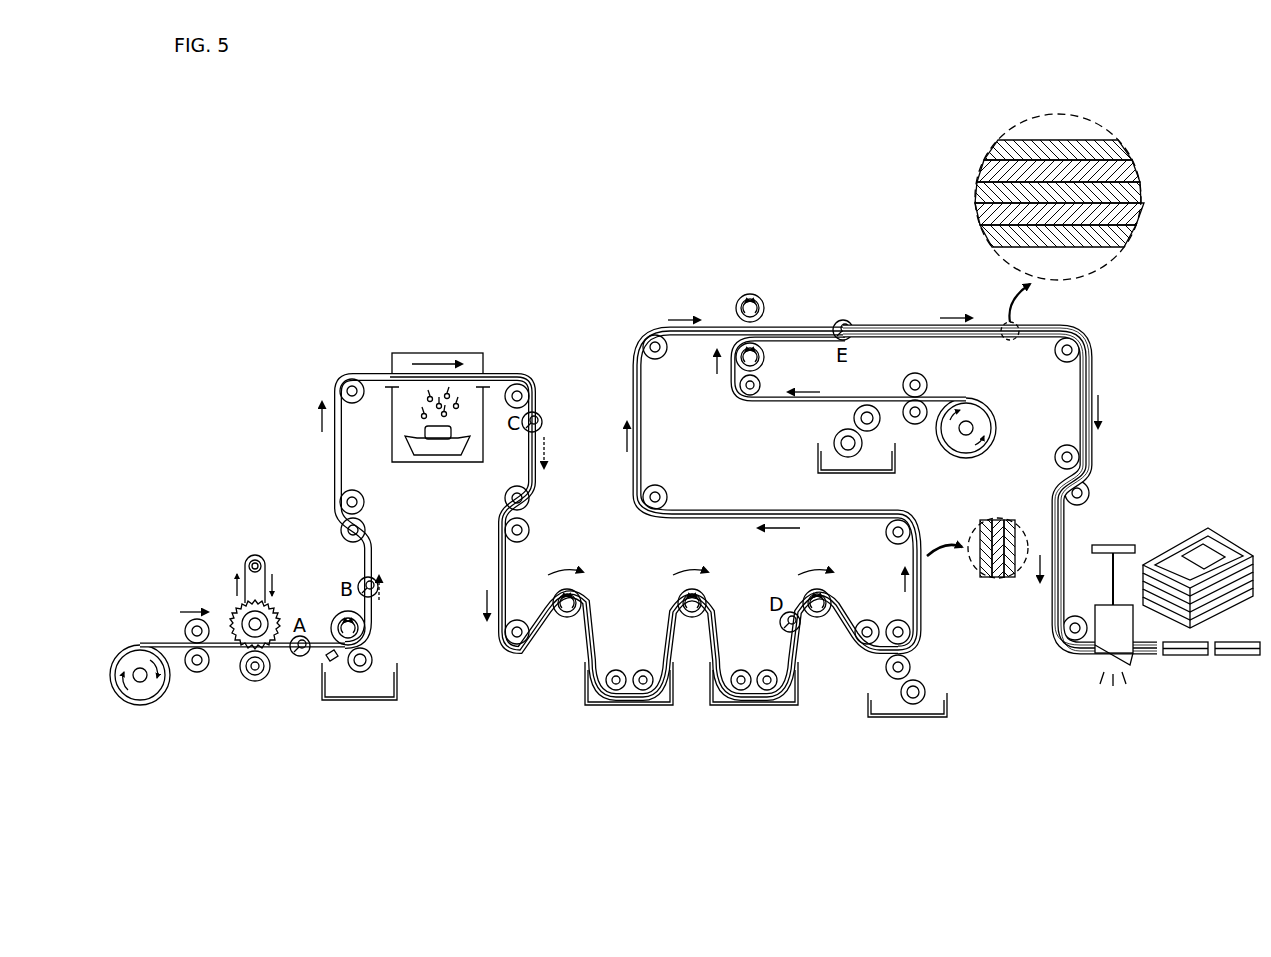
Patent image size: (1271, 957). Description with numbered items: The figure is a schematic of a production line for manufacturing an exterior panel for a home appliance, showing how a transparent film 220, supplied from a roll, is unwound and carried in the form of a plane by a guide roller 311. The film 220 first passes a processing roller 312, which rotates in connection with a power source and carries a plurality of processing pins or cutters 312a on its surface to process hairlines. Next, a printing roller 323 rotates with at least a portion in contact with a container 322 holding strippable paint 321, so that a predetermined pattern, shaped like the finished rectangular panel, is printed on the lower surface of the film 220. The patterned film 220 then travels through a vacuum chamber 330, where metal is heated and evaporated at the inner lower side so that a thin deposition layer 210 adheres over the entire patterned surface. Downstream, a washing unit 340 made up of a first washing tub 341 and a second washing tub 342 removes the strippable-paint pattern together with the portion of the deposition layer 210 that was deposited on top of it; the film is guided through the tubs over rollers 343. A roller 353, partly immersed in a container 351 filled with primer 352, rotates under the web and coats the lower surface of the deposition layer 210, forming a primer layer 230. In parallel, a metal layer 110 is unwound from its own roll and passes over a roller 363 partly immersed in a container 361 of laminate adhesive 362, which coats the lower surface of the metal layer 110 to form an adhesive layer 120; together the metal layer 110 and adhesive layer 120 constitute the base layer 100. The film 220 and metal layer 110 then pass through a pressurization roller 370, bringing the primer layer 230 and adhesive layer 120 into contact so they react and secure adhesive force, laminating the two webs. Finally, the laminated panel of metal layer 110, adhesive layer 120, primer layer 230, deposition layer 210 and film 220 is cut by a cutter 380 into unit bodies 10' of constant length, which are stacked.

The unit body 10' is at (1198, 532).
The base layer 100 is at (928, 268).
The metal layer 110 is at (944, 396).
The adhesive layer 120 is at (884, 325).
The deposition layer 210 is at (526, 475).
The film 220 is at (165, 640).
The primer layer 230 is at (920, 620).
The guide roller 311 is at (191, 615).
The processing roller 312 is at (238, 622).
The processing pins or cutters 312a is at (272, 608).
The strippable paint 321 is at (398, 688).
The container 322 is at (398, 690).
The printing roller 323 is at (372, 652).
The vacuum chamber 330 is at (462, 352).
The washing unit 340 is at (691, 705).
The first washing tub 341 is at (652, 707).
The second washing tub 342 is at (729, 707).
The dip rollers 343 is at (767, 668).
The container 351 is at (948, 706).
The primer 352 is at (948, 700).
The roller 353 is at (920, 683).
The container 361 is at (896, 472).
The laminate adhesive 362 is at (896, 465).
The roller 363 is at (835, 448).
The pressurization roller 370 is at (749, 292).
The cutter 380 is at (1128, 622).